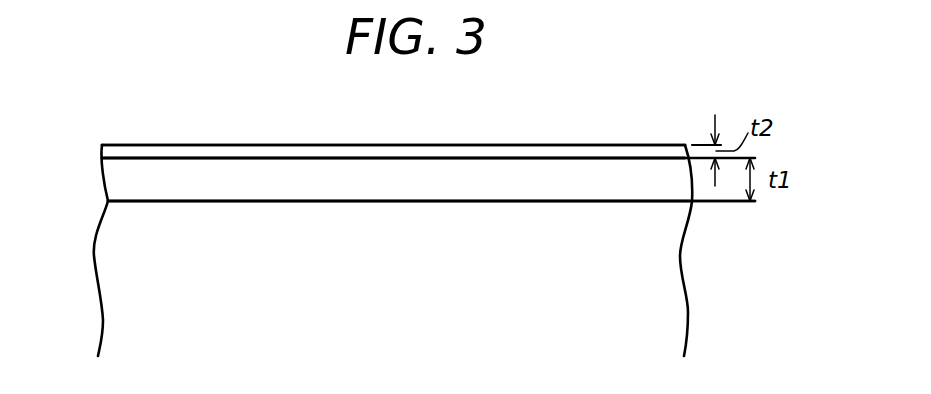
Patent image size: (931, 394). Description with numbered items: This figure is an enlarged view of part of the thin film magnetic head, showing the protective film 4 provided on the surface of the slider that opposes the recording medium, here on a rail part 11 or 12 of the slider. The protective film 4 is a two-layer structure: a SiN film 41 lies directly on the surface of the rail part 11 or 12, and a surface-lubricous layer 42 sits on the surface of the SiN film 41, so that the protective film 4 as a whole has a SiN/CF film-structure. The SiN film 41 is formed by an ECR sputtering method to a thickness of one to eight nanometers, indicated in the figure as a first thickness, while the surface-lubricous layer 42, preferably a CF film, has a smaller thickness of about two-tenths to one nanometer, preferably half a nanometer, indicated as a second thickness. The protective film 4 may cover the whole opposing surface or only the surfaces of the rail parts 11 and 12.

The protective film 4 is at (397, 175).
The SiN film 41 is at (114, 185).
The surface-lubricous layer 42 is at (111, 152).
The rail part 11 is at (464, 250).
The rail part 12 is at (640, 302).